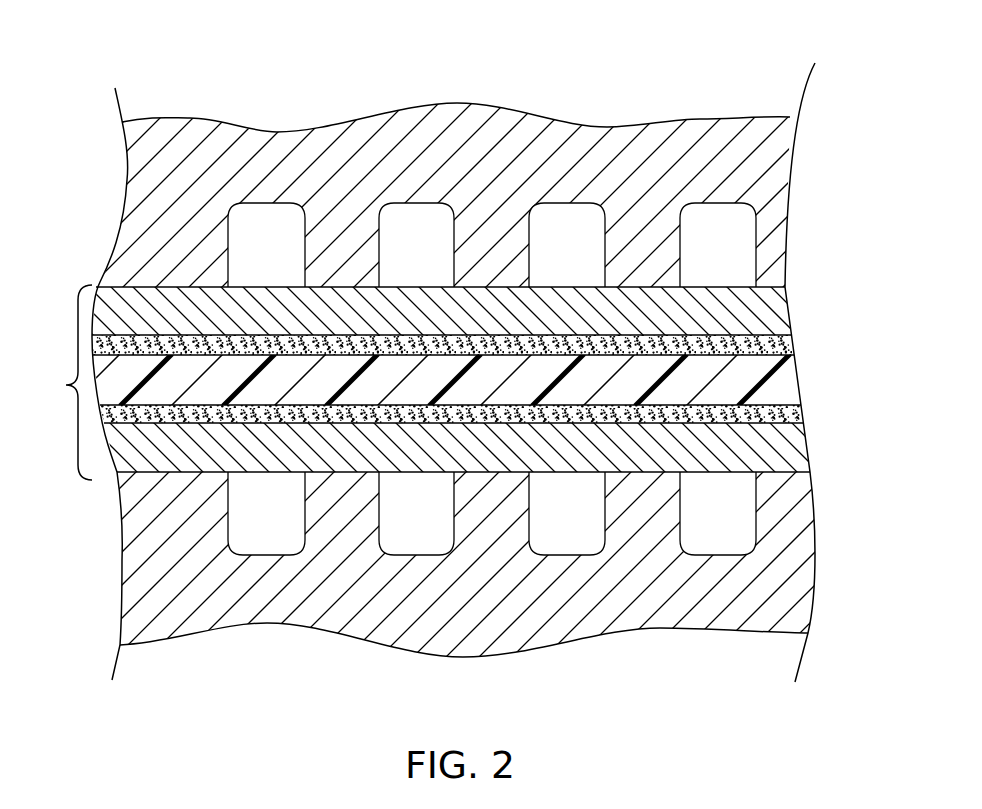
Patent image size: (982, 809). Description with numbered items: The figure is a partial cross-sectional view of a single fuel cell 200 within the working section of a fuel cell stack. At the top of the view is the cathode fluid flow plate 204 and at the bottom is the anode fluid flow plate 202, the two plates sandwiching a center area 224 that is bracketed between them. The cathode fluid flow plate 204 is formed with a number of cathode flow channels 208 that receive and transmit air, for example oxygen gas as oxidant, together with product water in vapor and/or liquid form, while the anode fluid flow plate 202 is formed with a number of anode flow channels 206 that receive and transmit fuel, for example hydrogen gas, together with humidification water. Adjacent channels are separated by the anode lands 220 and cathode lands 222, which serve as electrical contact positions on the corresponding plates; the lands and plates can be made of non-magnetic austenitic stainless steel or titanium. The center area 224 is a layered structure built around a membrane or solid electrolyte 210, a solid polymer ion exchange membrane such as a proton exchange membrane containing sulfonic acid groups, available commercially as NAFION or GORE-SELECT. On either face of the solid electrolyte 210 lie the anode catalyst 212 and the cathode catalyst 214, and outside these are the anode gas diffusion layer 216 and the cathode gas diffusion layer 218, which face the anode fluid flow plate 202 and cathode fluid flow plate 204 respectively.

The fuel cell 200 is at (628, 68).
The anode fluid flow plate 202 is at (620, 603).
The cathode fluid flow plate 204 is at (445, 130).
The anode flow channel 206 is at (398, 570).
The cathode flow channel 208 is at (384, 186).
The solid electrolyte 210 is at (782, 380).
The anode catalyst 212 is at (793, 413).
The cathode catalyst 214 is at (788, 340).
The anode gas diffusion layer 216 is at (793, 452).
The cathode gas diffusion layer 218 is at (763, 302).
The anode land 220 is at (339, 486).
The cathode land 222 is at (334, 260).
The center area 224 is at (53, 382).